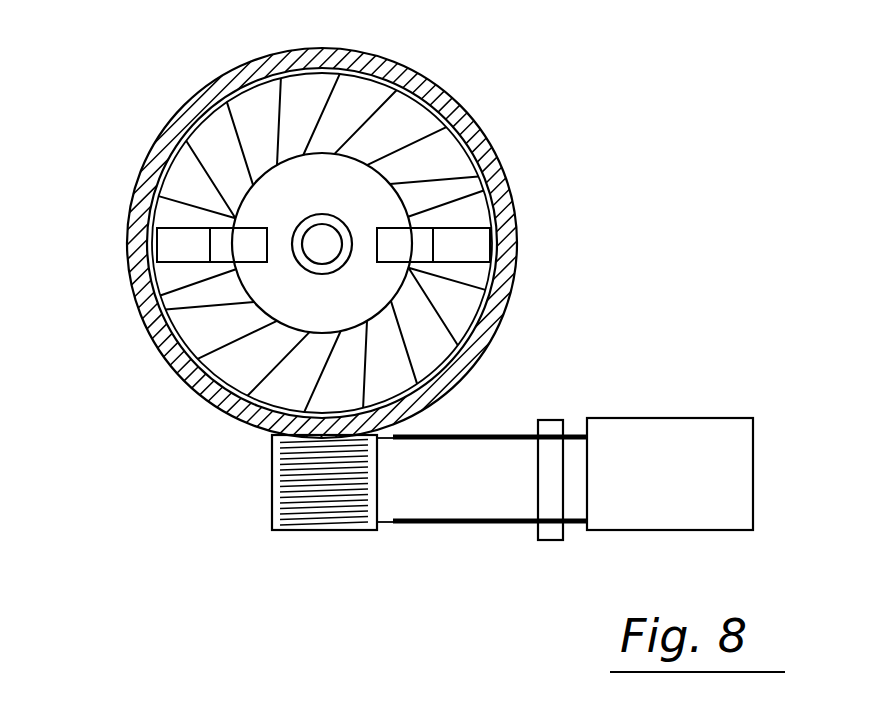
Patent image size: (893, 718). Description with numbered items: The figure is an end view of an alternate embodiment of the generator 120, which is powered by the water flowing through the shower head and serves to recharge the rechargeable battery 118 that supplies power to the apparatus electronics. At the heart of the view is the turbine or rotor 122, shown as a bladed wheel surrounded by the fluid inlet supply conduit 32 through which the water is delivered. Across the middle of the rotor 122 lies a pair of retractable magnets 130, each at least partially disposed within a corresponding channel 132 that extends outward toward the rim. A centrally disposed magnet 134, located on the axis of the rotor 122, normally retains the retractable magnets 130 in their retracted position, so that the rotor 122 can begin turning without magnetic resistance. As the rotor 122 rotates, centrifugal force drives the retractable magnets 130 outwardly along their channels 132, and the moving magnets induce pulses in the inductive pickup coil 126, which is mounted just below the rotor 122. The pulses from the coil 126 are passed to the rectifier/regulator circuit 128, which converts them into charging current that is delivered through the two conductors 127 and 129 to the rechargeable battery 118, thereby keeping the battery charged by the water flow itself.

The generator 120 is at (424, 293).
The fluid inlet supply conduit 32 is at (482, 128).
The turbine or rotor 122 is at (458, 195).
The retractable magnets 130 is at (210, 243).
The channel 132 is at (158, 247).
The centrally disposed magnet 134 is at (323, 225).
The inductive pickup coil 126 is at (283, 504).
The conductor 127 is at (462, 435).
The rectifier/regulator circuit 128 is at (548, 427).
The rechargeable battery 118 is at (667, 428).
The conductor 129 is at (423, 527).